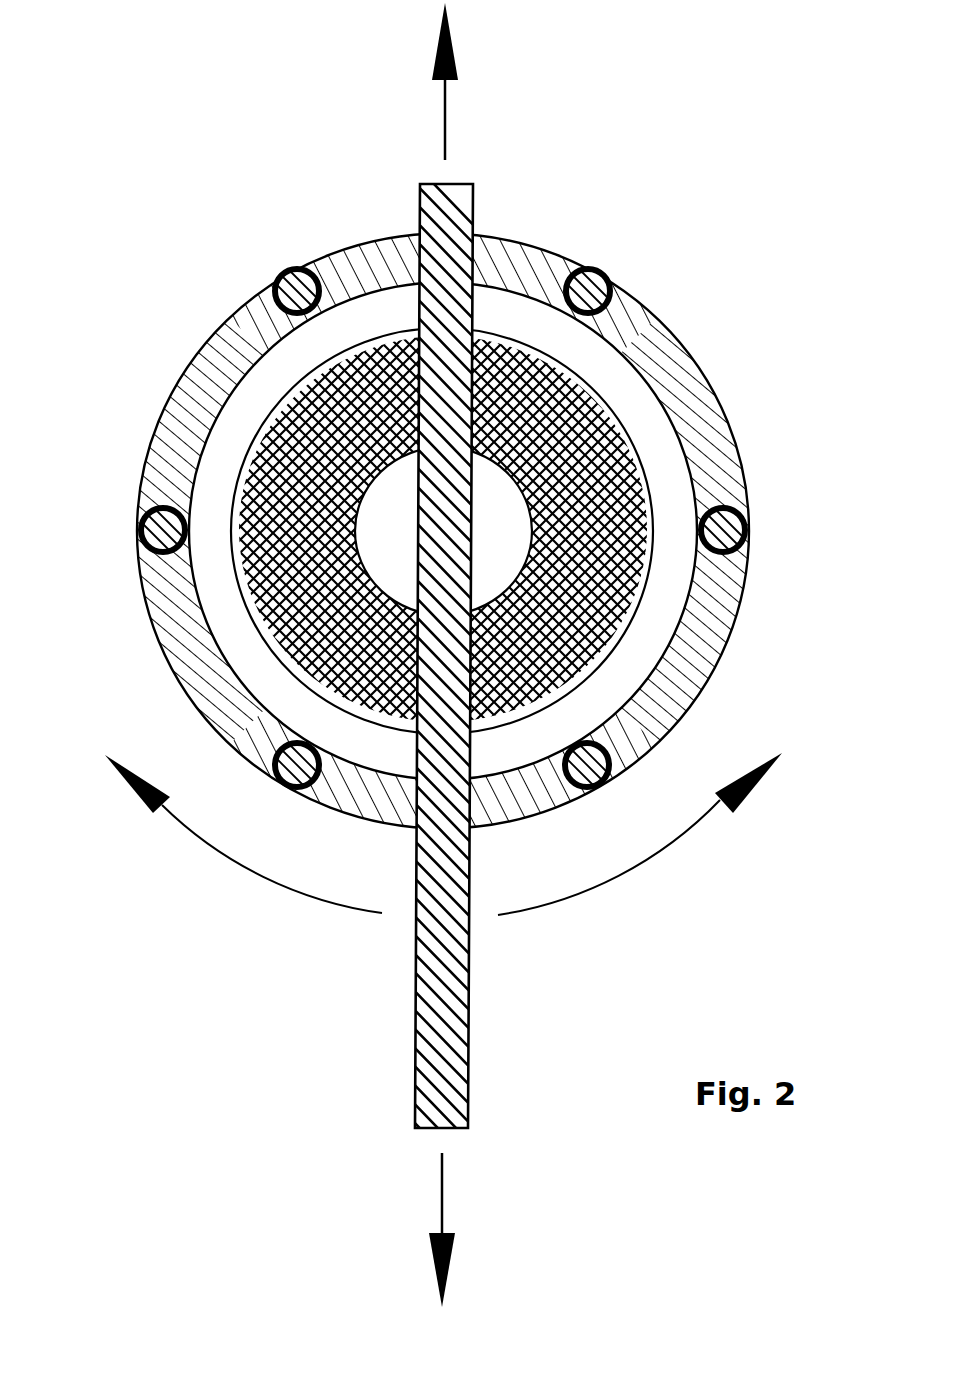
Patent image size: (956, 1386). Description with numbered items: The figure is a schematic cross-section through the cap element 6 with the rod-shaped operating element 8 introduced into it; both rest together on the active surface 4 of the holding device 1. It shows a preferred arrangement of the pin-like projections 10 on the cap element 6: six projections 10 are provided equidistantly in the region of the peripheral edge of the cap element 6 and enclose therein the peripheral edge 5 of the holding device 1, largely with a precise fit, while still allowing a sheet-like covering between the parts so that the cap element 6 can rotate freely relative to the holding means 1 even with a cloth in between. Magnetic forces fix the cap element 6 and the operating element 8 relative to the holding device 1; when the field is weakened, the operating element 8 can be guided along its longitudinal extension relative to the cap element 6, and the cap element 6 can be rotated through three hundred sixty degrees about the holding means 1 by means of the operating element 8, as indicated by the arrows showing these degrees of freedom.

The holding device 1 is at (246, 604).
The active surface 4 is at (647, 628).
The peripheral edge 5 is at (215, 402).
The cap element 6 is at (693, 402).
The operating element 8 is at (452, 213).
The pin-like projections 10 is at (277, 275).